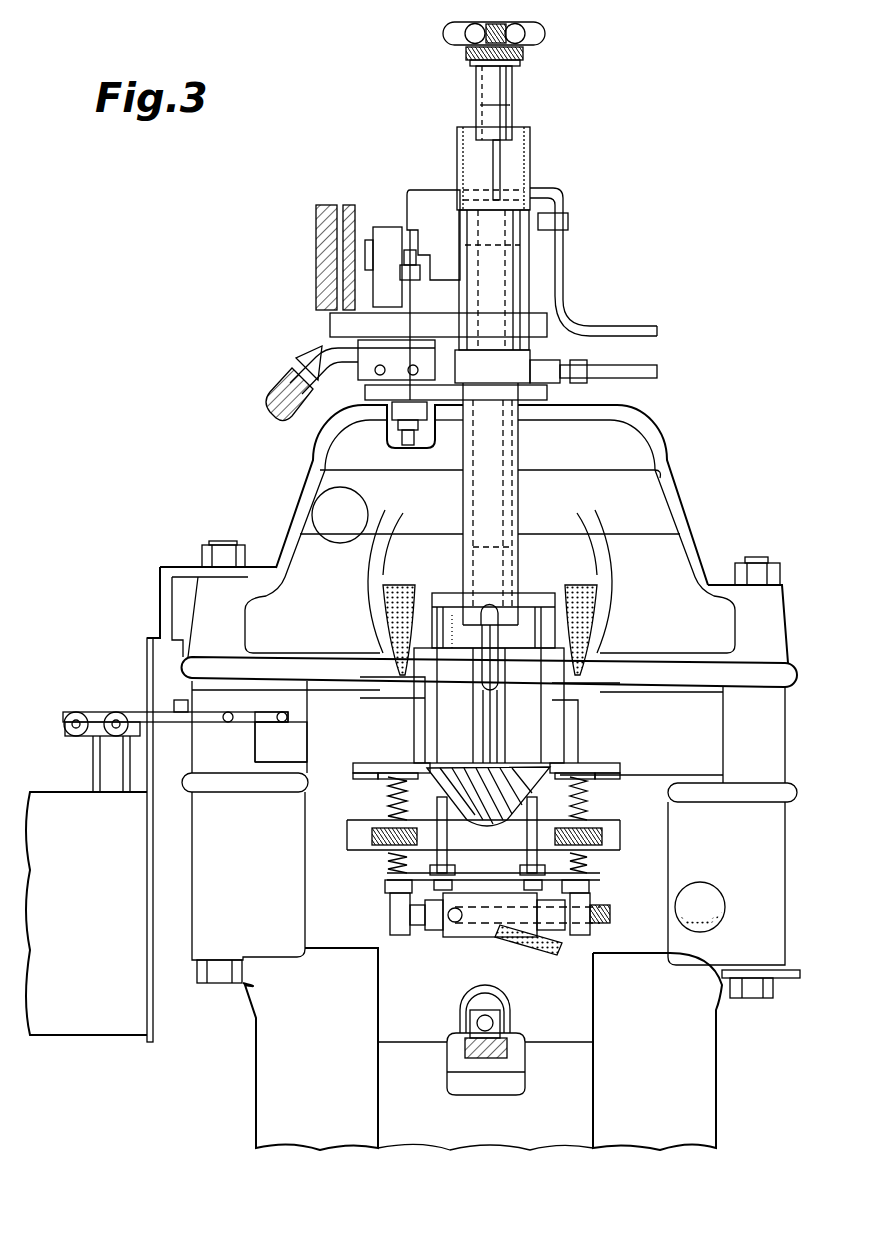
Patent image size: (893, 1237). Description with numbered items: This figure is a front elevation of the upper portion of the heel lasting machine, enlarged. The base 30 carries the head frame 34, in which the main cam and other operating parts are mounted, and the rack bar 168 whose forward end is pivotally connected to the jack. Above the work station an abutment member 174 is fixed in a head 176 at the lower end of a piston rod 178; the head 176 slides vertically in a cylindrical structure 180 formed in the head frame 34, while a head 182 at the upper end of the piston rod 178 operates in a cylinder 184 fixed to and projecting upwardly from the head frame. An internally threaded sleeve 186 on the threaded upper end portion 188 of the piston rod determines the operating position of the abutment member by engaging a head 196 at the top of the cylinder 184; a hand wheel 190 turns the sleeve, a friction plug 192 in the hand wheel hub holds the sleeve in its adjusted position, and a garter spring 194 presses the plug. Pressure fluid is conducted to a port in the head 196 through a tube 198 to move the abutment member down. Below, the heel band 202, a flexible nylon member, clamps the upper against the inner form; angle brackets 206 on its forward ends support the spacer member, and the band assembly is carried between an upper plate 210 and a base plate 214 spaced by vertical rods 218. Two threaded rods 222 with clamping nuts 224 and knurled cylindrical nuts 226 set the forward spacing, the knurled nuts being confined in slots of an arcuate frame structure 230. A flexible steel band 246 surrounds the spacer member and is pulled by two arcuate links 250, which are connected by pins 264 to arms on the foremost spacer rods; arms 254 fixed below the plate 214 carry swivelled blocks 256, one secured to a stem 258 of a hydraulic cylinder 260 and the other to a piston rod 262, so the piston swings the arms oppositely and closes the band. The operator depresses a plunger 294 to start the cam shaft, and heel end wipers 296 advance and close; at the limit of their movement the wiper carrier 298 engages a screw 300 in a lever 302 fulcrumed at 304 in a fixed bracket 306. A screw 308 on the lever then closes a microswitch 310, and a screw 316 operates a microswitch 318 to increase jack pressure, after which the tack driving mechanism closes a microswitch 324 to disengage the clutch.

The base 30 is at (270, 1054).
The head frame 34 is at (666, 456).
The rack bar 168 is at (508, 1042).
The abutment member 174 is at (490, 712).
The head 176 is at (497, 560).
The piston rod 178 is at (497, 488).
The cylindrical structure 180 is at (518, 441).
The head 182 is at (535, 260).
The cylinder 184 is at (512, 316).
The internally threaded sleeve 186 is at (512, 96).
The threaded upper end portion 188 is at (497, 158).
The hand wheel 190 is at (536, 38).
The friction plug 192 is at (498, 62).
The garter spring 194 is at (466, 54).
The head 196 is at (470, 181).
The tube 198 is at (633, 320).
The heel band 202 is at (440, 770).
The angle brackets 206 is at (390, 800).
The plate 210 is at (605, 765).
The plate 214 is at (590, 873).
The vertical rods 218 is at (443, 812).
The threaded rods 222 is at (372, 836).
The clamping nuts 224 is at (386, 888).
The knurled cylindrical nuts 226 is at (388, 863).
The arcuate frame structure 230 is at (345, 848).
The flexible steel band 246 is at (368, 765).
The arcuate links 250 is at (365, 778).
The arms 254 is at (392, 920).
The block 256 is at (428, 930).
The stem 258 is at (540, 958).
The hydraulic cylinder 260 is at (475, 937).
The piston rod 262 is at (433, 945).
The pins 264 is at (721, 762).
The plunger 294 is at (703, 900).
The heel end wipers 296 is at (418, 768).
The wiper carrier 298 is at (277, 762).
The screw 300 is at (279, 714).
The lever 302 is at (149, 712).
The fulcrum 304 is at (178, 728).
The fixed bracket 306 is at (170, 734).
The screw 308 is at (125, 760).
The microswitch 310 is at (112, 750).
The screw 316 is at (76, 712).
The microswitch 318 is at (68, 732).
The microswitch 324 is at (382, 355).